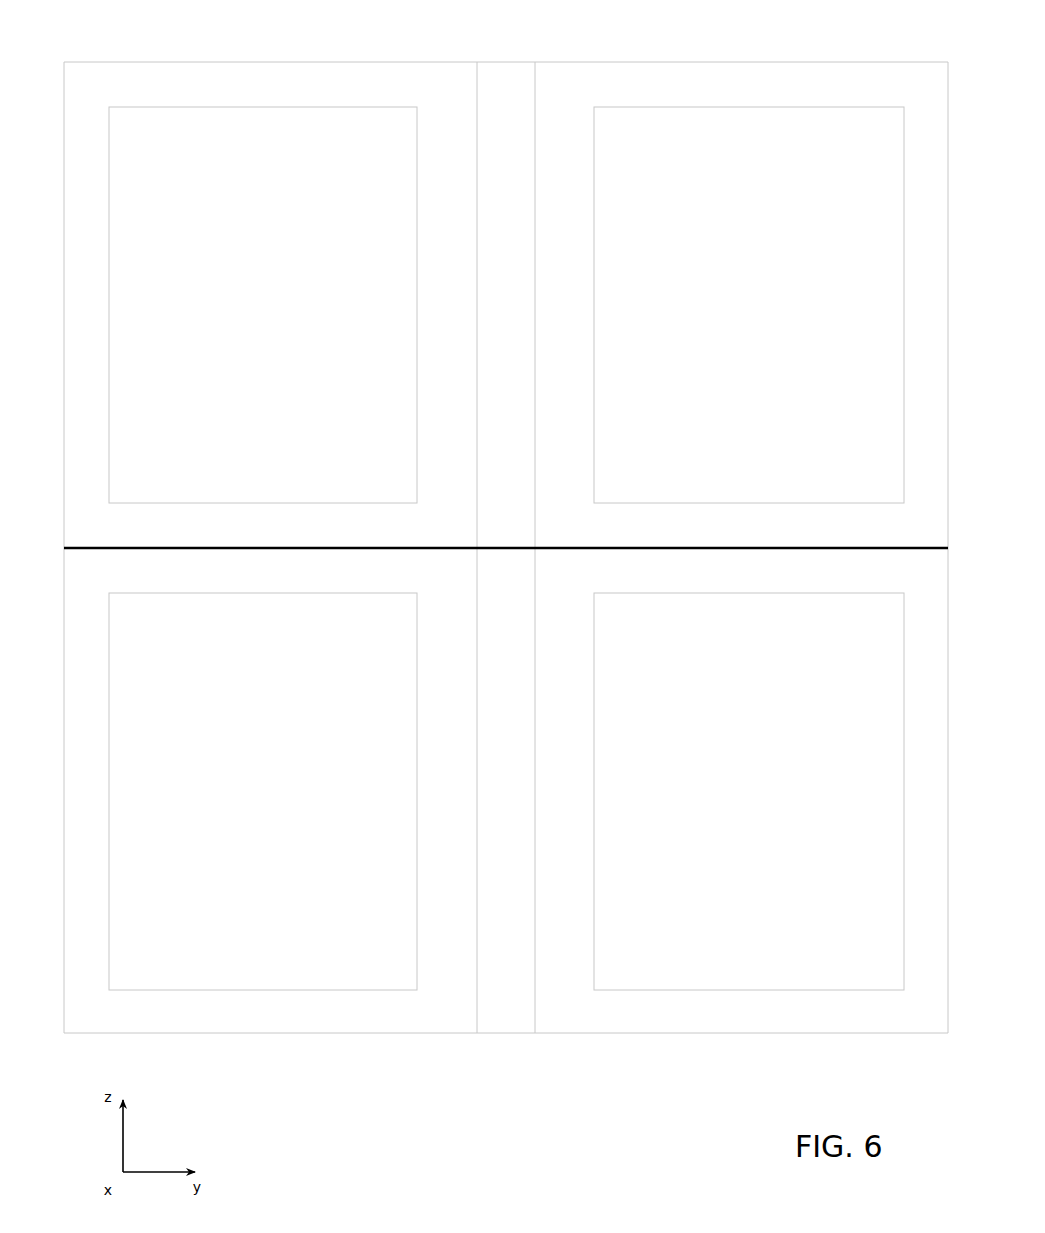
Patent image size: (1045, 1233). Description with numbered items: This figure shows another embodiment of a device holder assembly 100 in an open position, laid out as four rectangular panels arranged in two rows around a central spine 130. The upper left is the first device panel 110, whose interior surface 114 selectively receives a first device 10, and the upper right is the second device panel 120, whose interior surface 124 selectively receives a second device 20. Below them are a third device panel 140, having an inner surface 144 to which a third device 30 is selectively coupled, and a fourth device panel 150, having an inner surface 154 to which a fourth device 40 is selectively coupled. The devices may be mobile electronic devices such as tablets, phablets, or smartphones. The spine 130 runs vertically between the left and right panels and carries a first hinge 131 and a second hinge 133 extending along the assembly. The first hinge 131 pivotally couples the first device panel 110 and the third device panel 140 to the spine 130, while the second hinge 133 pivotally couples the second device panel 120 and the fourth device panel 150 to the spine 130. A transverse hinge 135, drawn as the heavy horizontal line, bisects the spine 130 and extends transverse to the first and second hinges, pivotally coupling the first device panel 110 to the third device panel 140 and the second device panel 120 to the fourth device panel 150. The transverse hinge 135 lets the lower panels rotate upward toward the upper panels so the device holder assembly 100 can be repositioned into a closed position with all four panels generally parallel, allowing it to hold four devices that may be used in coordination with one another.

The device holder assembly 100 is at (487, 571).
The first device panel 110 is at (270, 274).
The interior surface 114 is at (263, 93).
The first device 10 is at (205, 142).
The second device panel 120 is at (741, 278).
The interior surface 124 is at (772, 98).
The second device 20 is at (602, 120).
The spine 130 is at (488, 516).
The first hinge 131 is at (477, 107).
The second hinge 133 is at (535, 99).
The transverse hinge 135 is at (95, 548).
The third device panel 140 is at (270, 830).
The inner surface 144 is at (322, 1020).
The third device 30 is at (269, 976).
The fourth device panel 150 is at (741, 825).
The inner surface 154 is at (778, 1010).
The fourth device 40 is at (727, 978).